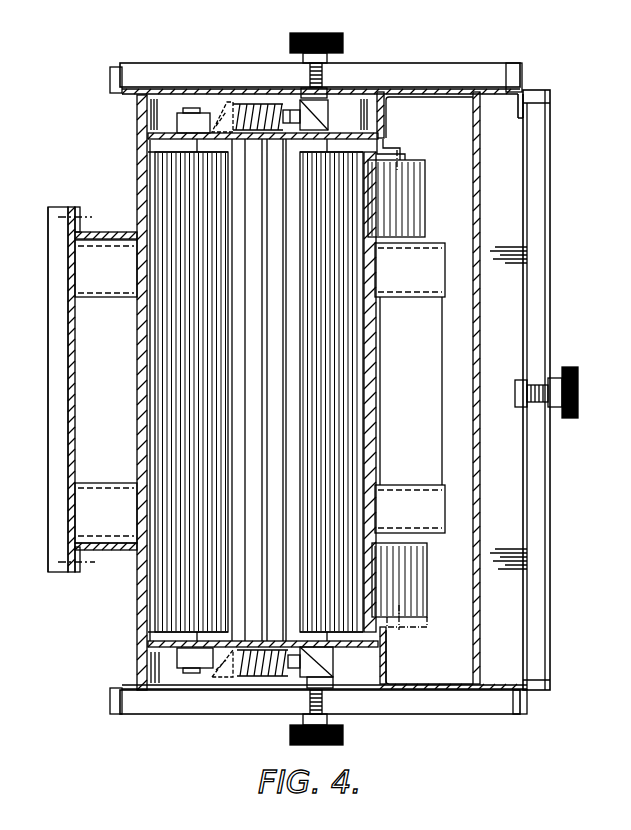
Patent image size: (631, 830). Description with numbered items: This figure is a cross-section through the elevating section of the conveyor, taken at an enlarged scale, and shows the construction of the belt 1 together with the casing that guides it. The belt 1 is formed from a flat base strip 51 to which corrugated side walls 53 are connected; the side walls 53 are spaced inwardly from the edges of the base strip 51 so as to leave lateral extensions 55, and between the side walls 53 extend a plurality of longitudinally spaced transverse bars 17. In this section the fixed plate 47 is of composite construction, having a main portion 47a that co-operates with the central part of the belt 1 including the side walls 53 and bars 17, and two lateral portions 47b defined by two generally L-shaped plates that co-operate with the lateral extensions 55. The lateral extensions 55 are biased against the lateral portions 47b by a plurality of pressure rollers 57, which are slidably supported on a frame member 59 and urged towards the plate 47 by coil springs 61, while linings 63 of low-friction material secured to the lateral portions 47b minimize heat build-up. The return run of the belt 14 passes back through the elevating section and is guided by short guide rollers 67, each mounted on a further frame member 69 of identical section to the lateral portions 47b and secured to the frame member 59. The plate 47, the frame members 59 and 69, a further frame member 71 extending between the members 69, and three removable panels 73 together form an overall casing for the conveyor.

The belt 1 is at (100, 333).
The return run of the belt 14 is at (47, 378).
The transverse bars 17 is at (420, 356).
The fixed plate 47 is at (72, 449).
The main portion 47a is at (54, 408).
The lateral portions 47b is at (105, 228).
The base strip 51 is at (143, 179).
The corrugated side walls 53 is at (83, 265).
The lateral extensions 55 is at (142, 157).
The pressure rollers 57 is at (172, 400).
The frame member 59 is at (168, 133).
The coil springs 61 is at (258, 104).
The linings 63 is at (137, 193).
The short guide rollers 67 is at (456, 147).
The further frame member 69 is at (436, 93).
The further frame member 71 is at (477, 383).
The removable panels 73 is at (392, 63).